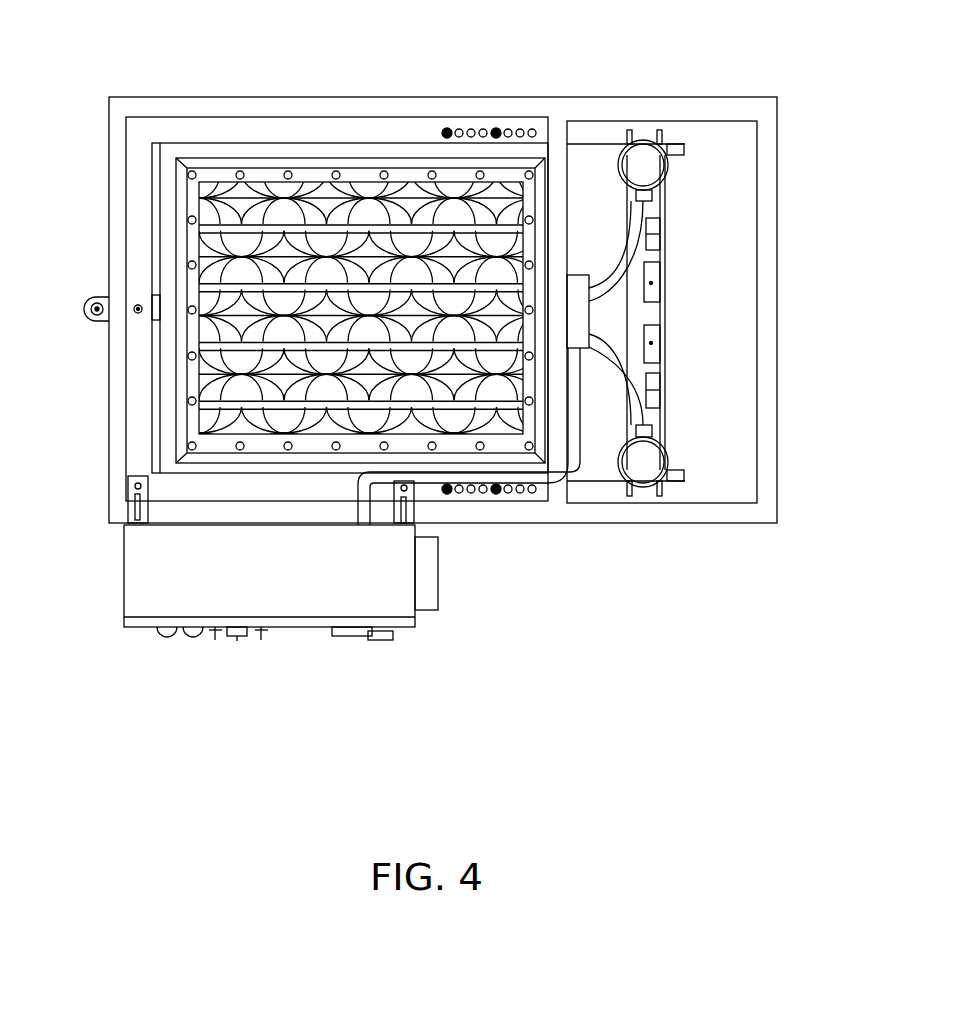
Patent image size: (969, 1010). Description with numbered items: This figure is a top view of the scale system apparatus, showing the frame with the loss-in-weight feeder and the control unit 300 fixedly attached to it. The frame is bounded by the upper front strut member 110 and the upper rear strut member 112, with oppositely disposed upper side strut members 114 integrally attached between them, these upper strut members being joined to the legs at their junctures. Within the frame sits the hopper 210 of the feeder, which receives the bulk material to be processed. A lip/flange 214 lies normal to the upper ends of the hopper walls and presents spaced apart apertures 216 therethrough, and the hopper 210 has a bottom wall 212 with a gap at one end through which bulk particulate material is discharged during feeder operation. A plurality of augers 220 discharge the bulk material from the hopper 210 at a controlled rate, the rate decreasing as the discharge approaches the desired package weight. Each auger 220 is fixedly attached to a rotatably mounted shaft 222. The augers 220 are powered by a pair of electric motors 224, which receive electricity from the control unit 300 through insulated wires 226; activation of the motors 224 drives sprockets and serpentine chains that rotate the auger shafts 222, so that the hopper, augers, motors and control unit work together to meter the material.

The upper front strut member 110 is at (766, 282).
The upper rear strut member 112 is at (120, 155).
The upper side strut members 114 is at (693, 108).
The hopper 210 is at (311, 165).
The bottom wall 212 is at (238, 207).
The lip/flange 214 is at (368, 178).
The apertures 216 is at (433, 171).
The augers 220 is at (238, 268).
The shaft 222 is at (207, 400).
The electric motors 224 is at (653, 169).
The insulated wires 226 is at (643, 210).
The control unit 300 is at (262, 586).